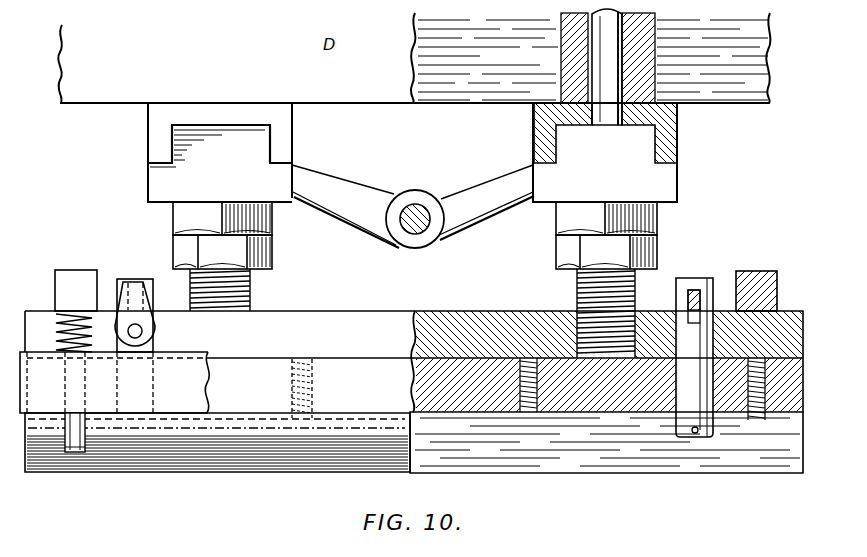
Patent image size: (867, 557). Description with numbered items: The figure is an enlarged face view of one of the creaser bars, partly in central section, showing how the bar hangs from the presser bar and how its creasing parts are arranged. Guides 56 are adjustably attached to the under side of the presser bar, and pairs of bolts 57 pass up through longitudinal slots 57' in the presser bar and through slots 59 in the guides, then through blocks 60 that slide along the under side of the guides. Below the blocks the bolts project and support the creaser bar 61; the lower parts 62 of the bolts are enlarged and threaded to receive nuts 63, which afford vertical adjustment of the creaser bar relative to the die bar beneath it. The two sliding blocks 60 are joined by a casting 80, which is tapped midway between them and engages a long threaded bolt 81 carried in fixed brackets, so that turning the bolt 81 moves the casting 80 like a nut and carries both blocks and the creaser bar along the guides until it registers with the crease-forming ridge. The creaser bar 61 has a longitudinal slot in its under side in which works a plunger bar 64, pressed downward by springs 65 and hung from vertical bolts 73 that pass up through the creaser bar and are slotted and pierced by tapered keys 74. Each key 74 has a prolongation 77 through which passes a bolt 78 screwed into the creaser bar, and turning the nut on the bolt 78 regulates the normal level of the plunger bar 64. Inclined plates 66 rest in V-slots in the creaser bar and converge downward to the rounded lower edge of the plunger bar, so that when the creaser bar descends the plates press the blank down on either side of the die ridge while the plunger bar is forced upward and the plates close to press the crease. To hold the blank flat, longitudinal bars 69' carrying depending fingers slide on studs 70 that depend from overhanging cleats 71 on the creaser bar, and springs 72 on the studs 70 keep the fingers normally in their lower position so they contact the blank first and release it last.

The guides 56 is at (285, 137).
The bolts 57 is at (639, 67).
The longitudinal slots 57' is at (644, 72).
The slots in guides 59 is at (655, 117).
The blocks 60 is at (156, 179).
The creaser bars 61 is at (391, 324).
The lower parts of the bolts 62 is at (250, 289).
The nuts 63 is at (262, 251).
The plunger bar 64 is at (580, 451).
The springs 65 is at (522, 412).
The inclined plates 66 is at (238, 455).
The longitudinal bars 69' is at (132, 371).
The studs 70 is at (72, 439).
The overhanging cleats 71 is at (753, 272).
The springs 72 is at (58, 321).
The vertical bolts 73 is at (682, 284).
The tapered keys 74 is at (696, 290).
The prolongation 77 is at (143, 306).
The bolt 78 is at (153, 332).
The casting 80 is at (370, 189).
The threaded bolt 81 is at (422, 229).